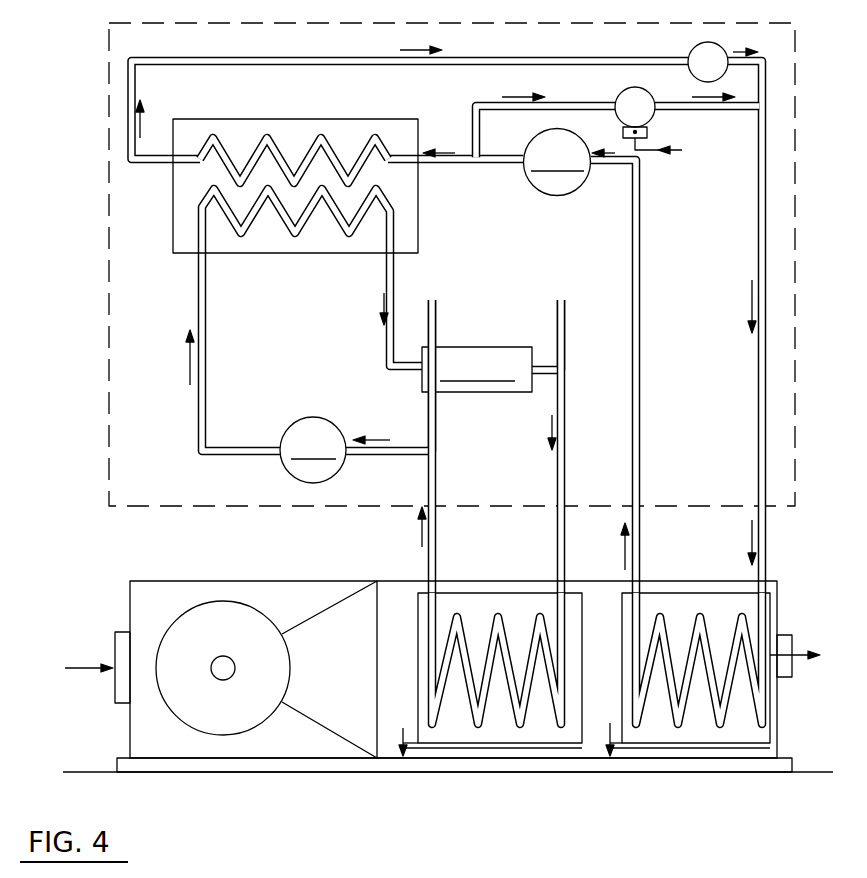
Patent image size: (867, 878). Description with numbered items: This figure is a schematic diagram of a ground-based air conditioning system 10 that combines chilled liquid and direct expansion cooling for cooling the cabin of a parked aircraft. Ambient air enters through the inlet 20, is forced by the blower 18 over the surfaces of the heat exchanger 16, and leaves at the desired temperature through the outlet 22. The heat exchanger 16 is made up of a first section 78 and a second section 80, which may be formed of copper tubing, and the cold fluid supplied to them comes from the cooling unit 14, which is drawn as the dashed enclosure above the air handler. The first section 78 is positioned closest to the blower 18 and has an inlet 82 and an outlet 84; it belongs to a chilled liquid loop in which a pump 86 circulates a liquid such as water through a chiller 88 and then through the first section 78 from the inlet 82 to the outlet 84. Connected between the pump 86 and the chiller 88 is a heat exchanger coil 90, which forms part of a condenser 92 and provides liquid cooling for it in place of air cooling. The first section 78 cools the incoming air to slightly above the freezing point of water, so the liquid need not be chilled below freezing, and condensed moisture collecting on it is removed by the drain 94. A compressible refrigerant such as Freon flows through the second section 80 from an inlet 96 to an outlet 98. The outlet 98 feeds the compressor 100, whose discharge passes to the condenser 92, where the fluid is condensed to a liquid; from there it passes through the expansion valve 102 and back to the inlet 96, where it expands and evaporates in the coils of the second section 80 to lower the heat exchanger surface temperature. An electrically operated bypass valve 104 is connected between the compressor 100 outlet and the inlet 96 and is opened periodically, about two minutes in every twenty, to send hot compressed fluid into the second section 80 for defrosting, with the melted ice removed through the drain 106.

The ground-based air conditioning system 10 is at (120, 730).
The cooling unit 14 is at (98, 210).
The heat exchanger 16 is at (393, 672).
The blower 18 is at (187, 708).
The inlet 20 is at (113, 640).
The outlet 22 is at (788, 635).
The first section 78 is at (520, 722).
The second section 80 is at (703, 733).
The inlet 82 is at (553, 590).
The outlet 84 is at (420, 590).
The pump 86 is at (306, 432).
The chiller 88 is at (486, 350).
The heat exchanger coil 90 is at (308, 222).
The condenser 92 is at (303, 123).
The drain 94 is at (400, 745).
The inlet 96 is at (768, 590).
The outlet 98 is at (644, 590).
The compressor 100 is at (537, 182).
The expansion valve 102 is at (698, 50).
The bypass valve 104 is at (628, 92).
The drain 106 is at (609, 738).